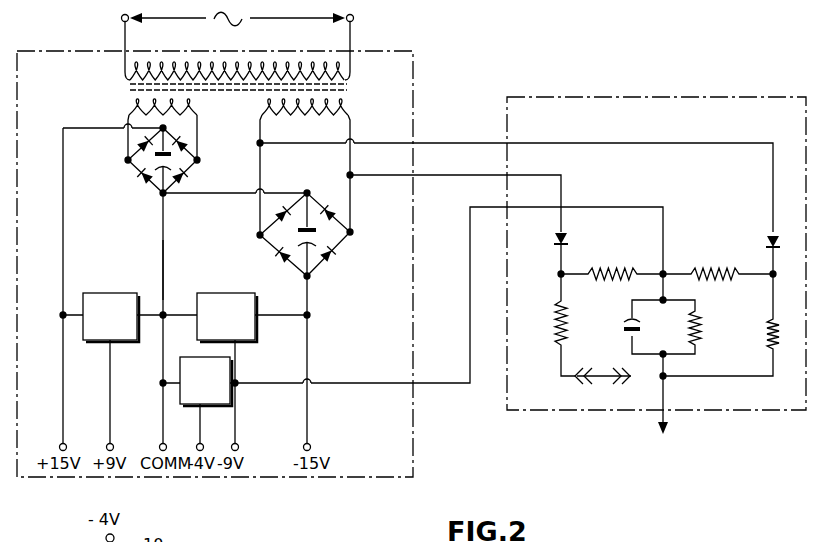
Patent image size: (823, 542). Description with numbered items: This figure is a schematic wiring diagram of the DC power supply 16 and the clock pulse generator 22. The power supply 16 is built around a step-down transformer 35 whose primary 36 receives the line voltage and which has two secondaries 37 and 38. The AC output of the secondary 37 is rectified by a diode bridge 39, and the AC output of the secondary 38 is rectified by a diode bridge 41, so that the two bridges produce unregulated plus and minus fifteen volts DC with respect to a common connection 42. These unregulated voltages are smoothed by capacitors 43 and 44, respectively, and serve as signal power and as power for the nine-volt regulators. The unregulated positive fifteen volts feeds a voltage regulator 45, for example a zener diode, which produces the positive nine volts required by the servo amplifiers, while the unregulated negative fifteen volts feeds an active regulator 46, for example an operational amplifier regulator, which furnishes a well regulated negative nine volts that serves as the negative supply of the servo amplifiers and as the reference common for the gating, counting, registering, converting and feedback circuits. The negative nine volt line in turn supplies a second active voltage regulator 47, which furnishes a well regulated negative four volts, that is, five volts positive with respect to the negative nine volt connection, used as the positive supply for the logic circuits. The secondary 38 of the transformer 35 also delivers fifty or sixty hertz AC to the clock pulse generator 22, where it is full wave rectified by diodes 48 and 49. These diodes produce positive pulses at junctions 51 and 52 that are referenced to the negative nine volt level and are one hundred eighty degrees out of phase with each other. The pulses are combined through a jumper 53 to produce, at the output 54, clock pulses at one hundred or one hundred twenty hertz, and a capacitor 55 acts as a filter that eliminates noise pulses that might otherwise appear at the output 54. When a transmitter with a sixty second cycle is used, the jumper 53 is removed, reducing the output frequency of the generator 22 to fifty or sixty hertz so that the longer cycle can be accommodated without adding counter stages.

The power supply 16 is at (417, 445).
The clock pulse generator 22 is at (738, 418).
The step-down transformer 35 is at (262, 128).
The primary 36 is at (350, 65).
The secondary 37 is at (128, 108).
The secondary 38 is at (350, 108).
The diode bridge 39 is at (173, 171).
The diode bridge 41 is at (323, 240).
The common connection 42 is at (165, 267).
The capacitor 43 is at (182, 161).
The capacitor 44 is at (322, 236).
The voltage regulator 45 is at (110, 293).
The active regulator 46 is at (253, 328).
The second active voltage regulator 47 is at (180, 372).
The diode 48 is at (567, 243).
The diode 49 is at (768, 244).
The junction 51 is at (560, 274).
The junction 52 is at (771, 272).
The jumper 53 is at (603, 370).
The output 54 is at (666, 375).
The capacitor 55 is at (628, 322).